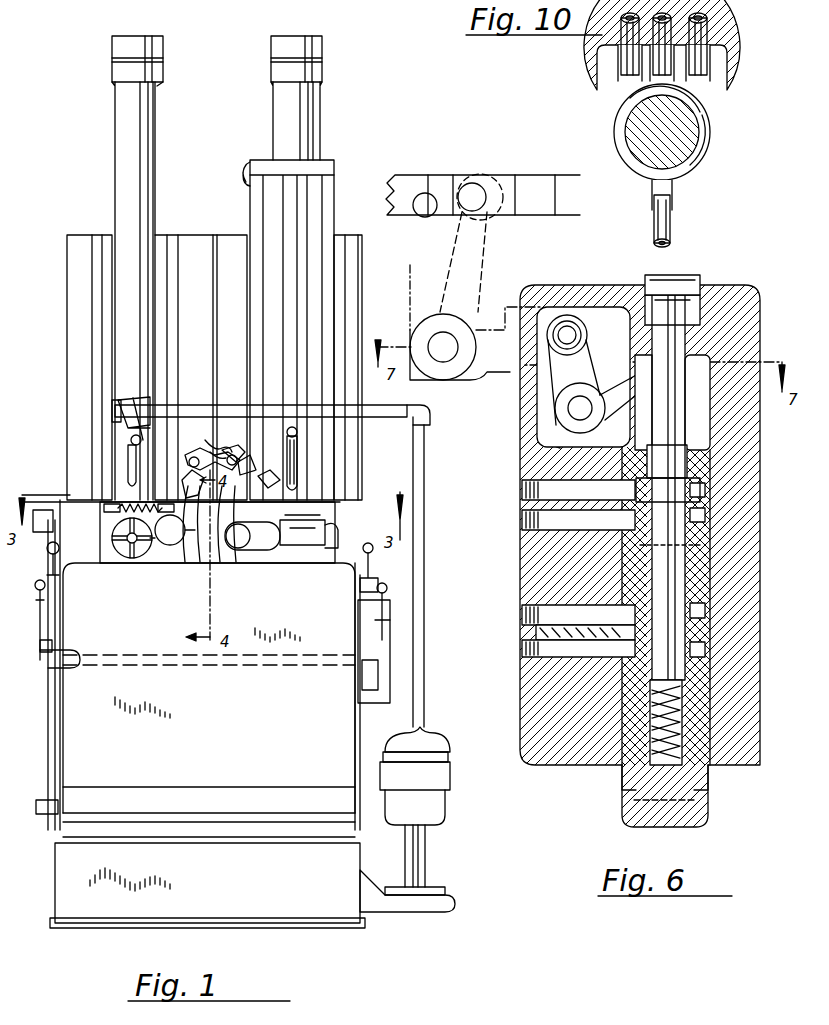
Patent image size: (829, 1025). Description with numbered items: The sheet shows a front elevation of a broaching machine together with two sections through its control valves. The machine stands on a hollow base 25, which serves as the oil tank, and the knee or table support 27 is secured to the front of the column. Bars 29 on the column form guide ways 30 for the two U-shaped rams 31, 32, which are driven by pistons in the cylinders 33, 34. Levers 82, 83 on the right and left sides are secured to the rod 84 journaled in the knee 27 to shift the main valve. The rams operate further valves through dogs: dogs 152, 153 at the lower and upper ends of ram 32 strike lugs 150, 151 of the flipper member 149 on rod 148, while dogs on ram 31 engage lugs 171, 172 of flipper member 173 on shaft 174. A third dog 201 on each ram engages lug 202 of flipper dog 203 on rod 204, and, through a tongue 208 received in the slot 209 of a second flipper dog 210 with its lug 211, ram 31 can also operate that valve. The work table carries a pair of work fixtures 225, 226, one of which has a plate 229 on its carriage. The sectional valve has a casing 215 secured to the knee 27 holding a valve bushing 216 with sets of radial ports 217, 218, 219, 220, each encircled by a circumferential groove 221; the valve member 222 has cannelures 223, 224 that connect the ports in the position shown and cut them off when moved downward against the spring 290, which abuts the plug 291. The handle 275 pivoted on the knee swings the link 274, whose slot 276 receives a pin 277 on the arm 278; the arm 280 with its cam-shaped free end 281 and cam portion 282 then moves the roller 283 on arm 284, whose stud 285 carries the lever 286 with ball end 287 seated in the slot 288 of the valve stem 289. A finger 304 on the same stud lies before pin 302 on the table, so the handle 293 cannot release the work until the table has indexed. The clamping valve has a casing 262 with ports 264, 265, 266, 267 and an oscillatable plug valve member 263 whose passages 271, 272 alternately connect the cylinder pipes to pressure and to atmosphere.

In FIG. 1, the base 25 is at (68, 890).
In FIG. 1, the knee or table support 27 is at (76, 762).
In FIG. 1, the bars 29 is at (75, 241).
In FIG. 1, the guide way 30 is at (110, 237).
In FIG. 1, the ram 31 is at (95, 500).
In FIG. 1, the ram 32 is at (262, 197).
In FIG. 1, the cylinder 33 is at (146, 110).
In FIG. 1, the cylinder 34 is at (305, 114).
In FIG. 1, the lever 82 is at (392, 607).
In FIG. 1, the lever 83 is at (40, 600).
In FIG. 1, the shaft or rod 84 is at (82, 670).
In FIG. 1, the rod 148 is at (222, 556).
In FIG. 1, the flipper member 149 is at (236, 560).
In FIG. 1, the lug 150 is at (300, 480).
In FIG. 1, the lug 151 is at (275, 552).
In FIG. 1, the dog 152 is at (282, 484).
In FIG. 1, the dog 153 is at (248, 164).
In FIG. 1, the lug 171 is at (127, 480).
In FIG. 1, the lug 172 is at (172, 548).
In FIG. 1, the flipper member 173 is at (134, 560).
In FIG. 1, the shaft or rod 174 is at (185, 552).
In FIG. 1, the third dog 201 is at (258, 468).
In FIG. 1, the lug 202 is at (245, 456).
In FIG. 1, the flipper dog 203 is at (240, 436).
In FIG. 1, the rod or shaft 204 is at (216, 442).
In FIG. 1, the tongue 208 is at (212, 450).
In FIG. 1, the groove or slot 209 is at (208, 440).
In FIG. 1, the second flipper dog 210 is at (185, 478).
In FIG. 1, the lug 211 is at (190, 458).
In FIG. 6, the valve casing 215 is at (532, 762).
In FIG. 6, the valve bushing 216 is at (628, 770).
In FIG. 6, the ports 217 is at (705, 505).
In FIG. 6, the ports 218 is at (700, 515).
In FIG. 6, the ports 219 is at (692, 618).
In FIG. 6, the ports 220 is at (692, 650).
In FIG. 6, the circumferential groove 221 is at (700, 490).
In FIG. 6, the valve member 222 is at (668, 678).
In FIG. 6, the cannelure 223 is at (688, 563).
In FIG. 6, the cannelure 224 is at (690, 632).
In FIG. 1, the work fixture 225 is at (118, 566).
In FIG. 1, the work fixture 226 is at (312, 552).
In FIG. 6, the plate 229 is at (446, 352).
In FIG. 10, the housing or casing 262 is at (735, 140).
In FIG. 10, the plug valve member 263 is at (688, 152).
In FIG. 10, the port 264 is at (626, 72).
In FIG. 10, the port 265 is at (660, 80).
In FIG. 10, the port 266 is at (697, 76).
In FIG. 10, the port 267 is at (668, 197).
In FIG. 10, the passage 271 is at (703, 128).
In FIG. 10, the passage 272 is at (690, 101).
In FIG. 6, the link 274 is at (406, 188).
In FIG. 1, the lever or handle 275 is at (378, 560).
In FIG. 6, the groove or slot 276 is at (494, 181).
In FIG. 6, the pin 277 is at (472, 185).
In FIG. 6, the arm 278 is at (490, 229).
In FIG. 6, the arm 280 is at (500, 386).
In FIG. 6, the free end 281 is at (548, 420).
In FIG. 6, the cam portion 282 is at (600, 345).
In FIG. 6, the roller 283 is at (562, 338).
In FIG. 6, the arm 284 is at (571, 330).
In FIG. 6, the shaft or stud 285 is at (550, 442).
In FIG. 6, the lever 286 is at (540, 460).
In FIG. 6, the ball end 287 is at (656, 375).
In FIG. 6, the notch or slot 288 is at (660, 392).
In FIG. 6, the valve stem 289 is at (665, 438).
In FIG. 6, the spring 290 is at (668, 714).
In FIG. 6, the plug 291 is at (700, 805).
In FIG. 1, the handle 293 is at (50, 566).
In FIG. 6, the pin 302 is at (420, 212).
In FIG. 6, the arm or finger 304 is at (425, 261).